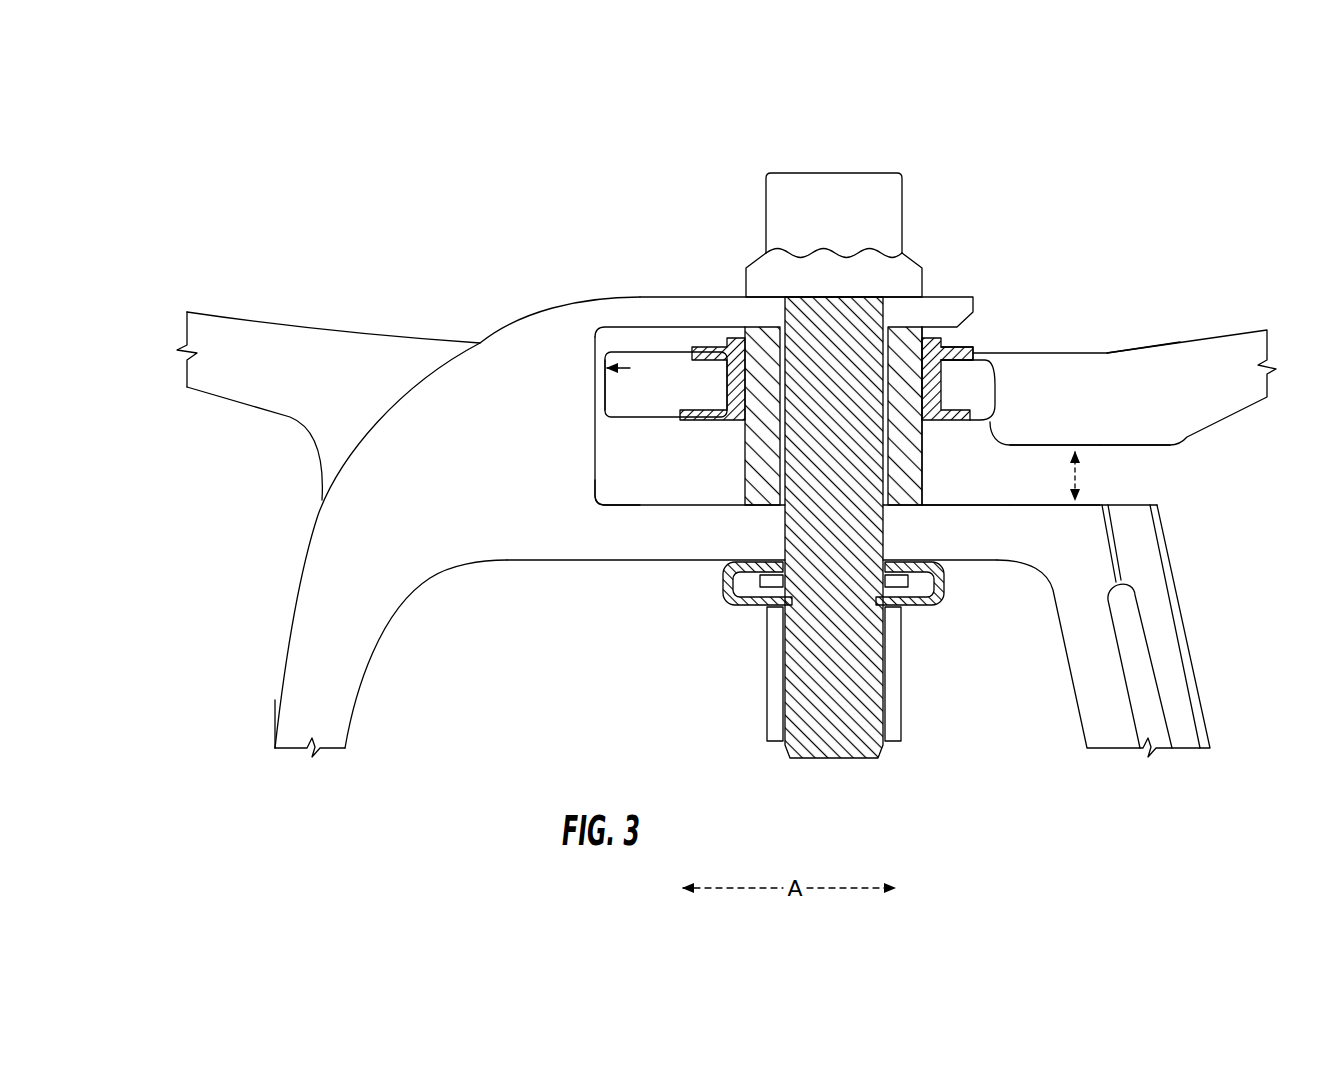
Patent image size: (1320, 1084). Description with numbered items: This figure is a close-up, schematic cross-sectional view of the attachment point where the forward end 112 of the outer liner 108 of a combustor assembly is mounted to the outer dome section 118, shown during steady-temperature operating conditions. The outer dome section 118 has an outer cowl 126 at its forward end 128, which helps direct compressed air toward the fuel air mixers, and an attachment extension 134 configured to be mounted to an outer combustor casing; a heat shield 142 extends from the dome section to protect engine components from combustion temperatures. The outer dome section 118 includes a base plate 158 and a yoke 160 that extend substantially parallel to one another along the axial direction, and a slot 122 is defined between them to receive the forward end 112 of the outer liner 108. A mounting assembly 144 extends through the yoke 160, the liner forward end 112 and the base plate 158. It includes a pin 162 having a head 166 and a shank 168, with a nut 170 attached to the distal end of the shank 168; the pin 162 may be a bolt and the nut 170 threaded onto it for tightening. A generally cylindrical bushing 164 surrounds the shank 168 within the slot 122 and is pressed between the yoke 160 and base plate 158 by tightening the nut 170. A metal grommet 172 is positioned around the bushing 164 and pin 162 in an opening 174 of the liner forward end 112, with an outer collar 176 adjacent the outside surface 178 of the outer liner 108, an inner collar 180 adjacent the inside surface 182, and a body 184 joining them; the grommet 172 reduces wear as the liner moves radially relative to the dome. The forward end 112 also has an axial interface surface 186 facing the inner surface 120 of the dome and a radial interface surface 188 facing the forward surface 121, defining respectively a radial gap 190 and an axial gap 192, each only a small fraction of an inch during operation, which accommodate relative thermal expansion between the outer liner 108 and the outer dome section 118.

The outer liner 108 is at (1165, 352).
The forward end 112 is at (630, 480).
The outer dome section 118 is at (362, 578).
The inner surface 120 is at (1017, 500).
The forward surface 121 is at (608, 476).
The slot 122 is at (942, 452).
The outer cowl 126 is at (287, 728).
The forward end 128 is at (212, 643).
The attachment extension 134 is at (218, 332).
The heat shield 142 is at (1163, 630).
The mounting assembly 144 is at (950, 220).
The base plate 158 is at (680, 525).
The yoke 160 is at (663, 310).
The pin 162 is at (866, 272).
The bushing 164 is at (952, 503).
The head 166 is at (783, 186).
The shank 168 is at (805, 650).
The nut 170 is at (945, 583).
The metal grommet 172 is at (941, 387).
The opening 174 is at (900, 376).
The outer collar 176 is at (965, 348).
The outside surface 178 is at (1110, 350).
The inner collar 180 is at (997, 434).
The inside surface 182 is at (690, 421).
The body 184 is at (715, 350).
The axial interface surface 186 is at (1163, 451).
The radial interface surface 188 is at (598, 392).
The radial gap 190 is at (1077, 490).
The axial gap 192 is at (590, 367).